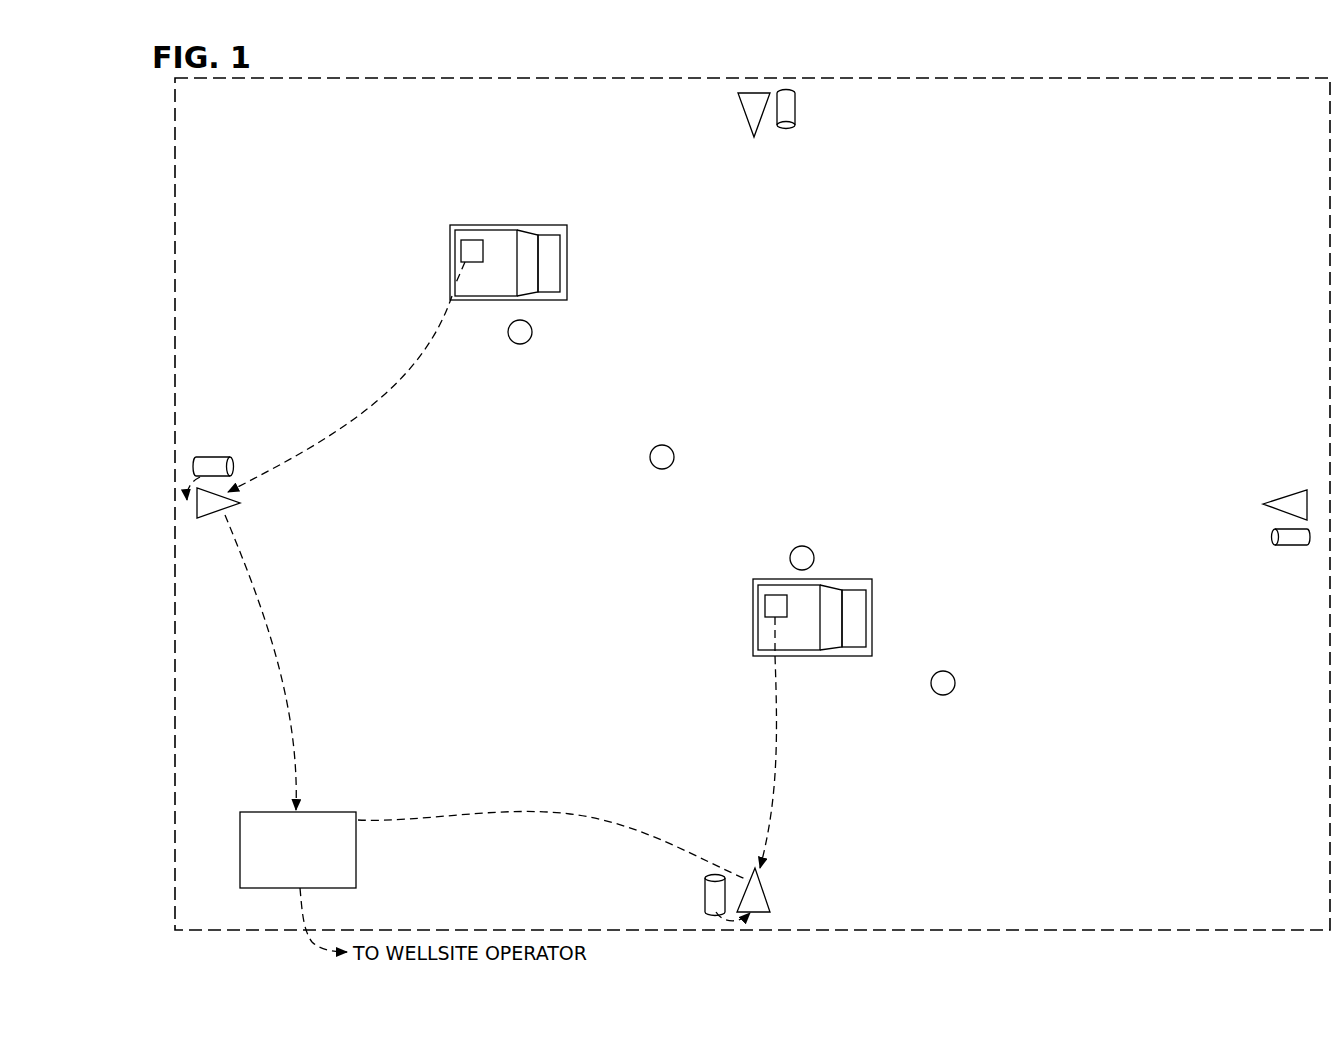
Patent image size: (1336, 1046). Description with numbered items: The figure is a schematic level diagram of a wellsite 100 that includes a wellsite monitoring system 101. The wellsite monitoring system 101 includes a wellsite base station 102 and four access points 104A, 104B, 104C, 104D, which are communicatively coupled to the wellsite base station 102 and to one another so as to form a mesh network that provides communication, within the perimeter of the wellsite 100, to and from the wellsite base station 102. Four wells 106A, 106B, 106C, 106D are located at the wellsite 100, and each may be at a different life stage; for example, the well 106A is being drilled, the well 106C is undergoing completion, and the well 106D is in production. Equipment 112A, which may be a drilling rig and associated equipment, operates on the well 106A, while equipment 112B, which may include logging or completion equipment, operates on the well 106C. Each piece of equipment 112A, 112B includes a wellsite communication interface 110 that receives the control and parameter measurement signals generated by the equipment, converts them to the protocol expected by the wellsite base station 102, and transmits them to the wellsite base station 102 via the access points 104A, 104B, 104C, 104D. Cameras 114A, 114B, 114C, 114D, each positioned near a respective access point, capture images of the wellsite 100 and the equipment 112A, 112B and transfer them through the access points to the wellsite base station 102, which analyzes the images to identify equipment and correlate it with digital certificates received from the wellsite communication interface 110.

The wellsite 100 is at (1060, 932).
The wellsite monitoring system 101 is at (280, 181).
The wellsite base station 102 is at (357, 858).
The access point 104A is at (216, 514).
The access point 104B is at (745, 112).
The access point 104C is at (1292, 495).
The access point 104D is at (769, 895).
The well 106A is at (518, 345).
The well 106B is at (670, 446).
The well 106C is at (805, 546).
The well 106D is at (950, 672).
The wellsite communication interface 110 is at (462, 262).
The equipment 112A is at (566, 224).
The equipment 112B is at (866, 578).
The camera 114A is at (228, 455).
The camera 114B is at (796, 112).
The camera 114C is at (1290, 548).
The camera 114D is at (705, 891).